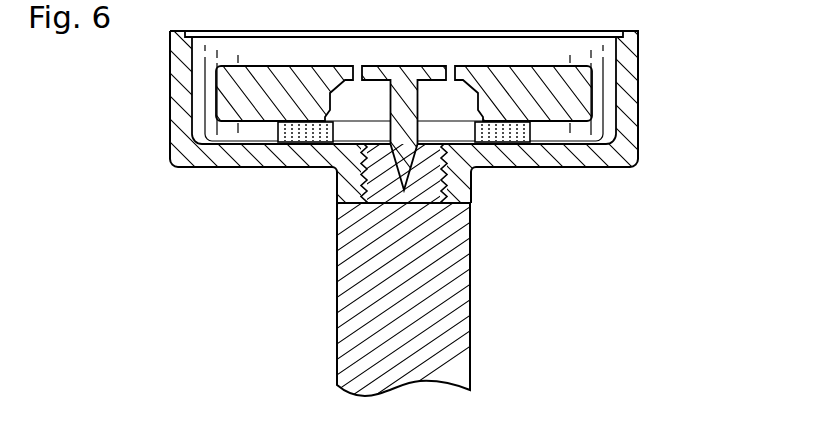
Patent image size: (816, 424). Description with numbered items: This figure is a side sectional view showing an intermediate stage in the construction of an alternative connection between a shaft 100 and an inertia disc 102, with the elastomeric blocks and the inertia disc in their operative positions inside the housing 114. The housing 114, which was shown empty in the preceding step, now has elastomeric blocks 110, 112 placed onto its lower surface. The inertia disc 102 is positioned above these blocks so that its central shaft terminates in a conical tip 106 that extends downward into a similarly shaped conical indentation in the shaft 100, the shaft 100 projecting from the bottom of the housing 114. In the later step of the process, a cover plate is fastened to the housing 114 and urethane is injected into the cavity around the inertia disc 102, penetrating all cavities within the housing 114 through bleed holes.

The shaft 100 is at (462, 299).
The inertia disc 102 is at (558, 78).
The conical tip 106 is at (338, 230).
The elastomeric block 110 is at (531, 143).
The elastomeric block 112 is at (276, 143).
The housing 114 is at (630, 123).